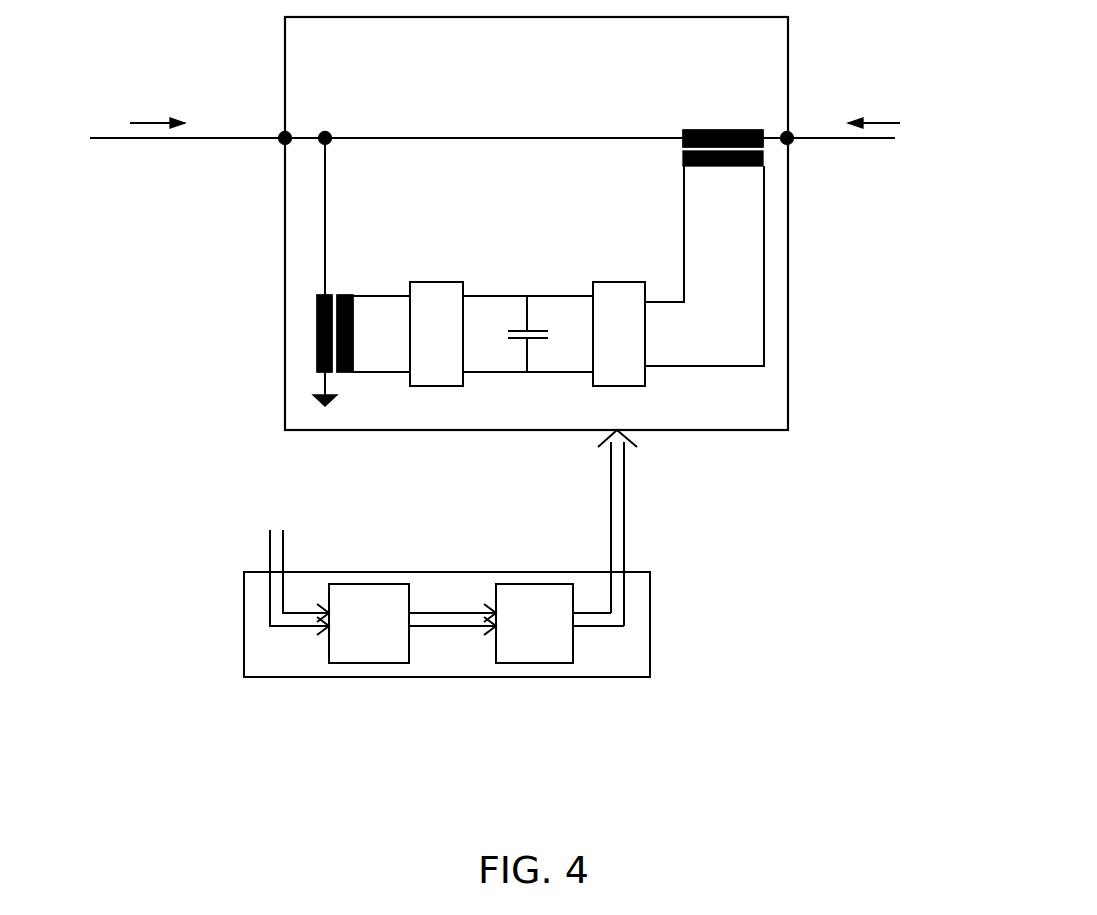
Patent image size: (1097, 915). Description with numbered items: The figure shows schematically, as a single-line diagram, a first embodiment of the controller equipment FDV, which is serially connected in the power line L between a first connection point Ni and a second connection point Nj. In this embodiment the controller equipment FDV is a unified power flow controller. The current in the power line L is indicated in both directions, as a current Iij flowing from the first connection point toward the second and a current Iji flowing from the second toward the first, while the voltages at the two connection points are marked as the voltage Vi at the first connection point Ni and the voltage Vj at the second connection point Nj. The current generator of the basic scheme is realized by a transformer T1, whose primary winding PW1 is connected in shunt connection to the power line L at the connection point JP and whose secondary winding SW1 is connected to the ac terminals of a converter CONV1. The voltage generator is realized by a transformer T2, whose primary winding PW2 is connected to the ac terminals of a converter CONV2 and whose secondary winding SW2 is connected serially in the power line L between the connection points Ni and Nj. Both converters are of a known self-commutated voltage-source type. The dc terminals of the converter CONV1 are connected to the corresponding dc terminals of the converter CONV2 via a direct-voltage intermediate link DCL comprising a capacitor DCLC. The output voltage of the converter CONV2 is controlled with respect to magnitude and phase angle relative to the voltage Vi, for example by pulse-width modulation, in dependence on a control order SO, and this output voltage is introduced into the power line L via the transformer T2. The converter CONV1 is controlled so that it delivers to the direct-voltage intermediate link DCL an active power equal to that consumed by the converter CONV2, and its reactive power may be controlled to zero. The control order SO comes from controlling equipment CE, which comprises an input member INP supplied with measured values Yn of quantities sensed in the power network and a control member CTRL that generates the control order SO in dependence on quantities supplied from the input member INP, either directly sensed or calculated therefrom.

The controller equipment FDV is at (788, 268).
The power line L is at (140, 140).
The first connection point Ni is at (283, 136).
The second connection point Nj is at (790, 136).
The connection point JP is at (325, 134).
The current from first to second connection point Iij is at (142, 82).
The current from second to first connection point Iji is at (891, 82).
The voltage at first connection point Vi is at (283, 141).
The voltage at second connection point Vj is at (790, 141).
The transformer T1 is at (337, 275).
The transformer T2 is at (665, 127).
The primary winding PW1 is at (317, 335).
The primary winding PW2 is at (695, 166).
The secondary winding SW1 is at (343, 373).
The secondary winding SW2 is at (715, 130).
The converter CONV1 is at (435, 282).
The converter CONV2 is at (623, 282).
The direct-voltage intermediate link DCL is at (513, 288).
The capacitor DCLC is at (515, 342).
The control order SO is at (632, 528).
The controlling equipment CE is at (650, 622).
The measured values Yn is at (295, 567).
The input member INP is at (369, 663).
The control member CTRL is at (534, 663).